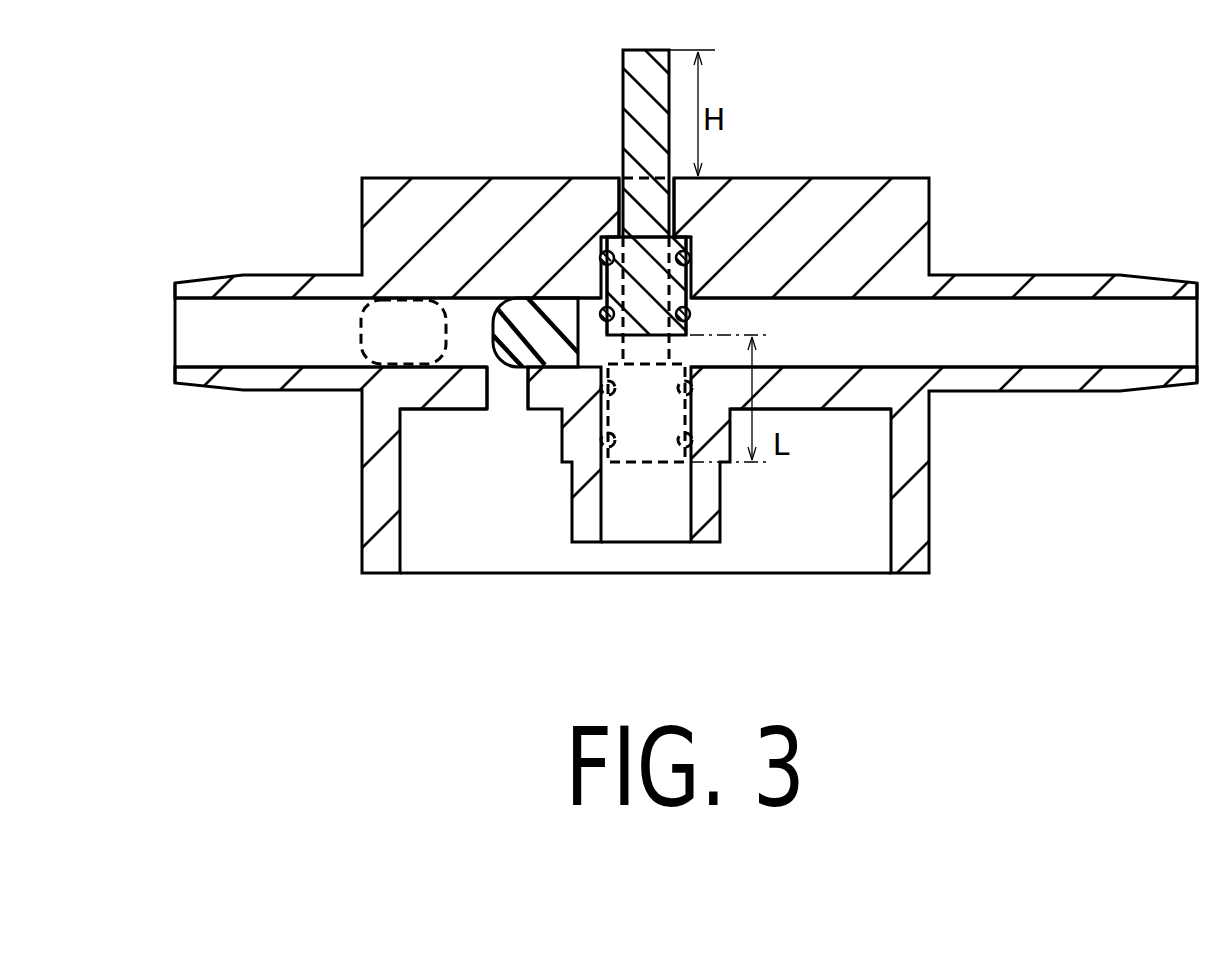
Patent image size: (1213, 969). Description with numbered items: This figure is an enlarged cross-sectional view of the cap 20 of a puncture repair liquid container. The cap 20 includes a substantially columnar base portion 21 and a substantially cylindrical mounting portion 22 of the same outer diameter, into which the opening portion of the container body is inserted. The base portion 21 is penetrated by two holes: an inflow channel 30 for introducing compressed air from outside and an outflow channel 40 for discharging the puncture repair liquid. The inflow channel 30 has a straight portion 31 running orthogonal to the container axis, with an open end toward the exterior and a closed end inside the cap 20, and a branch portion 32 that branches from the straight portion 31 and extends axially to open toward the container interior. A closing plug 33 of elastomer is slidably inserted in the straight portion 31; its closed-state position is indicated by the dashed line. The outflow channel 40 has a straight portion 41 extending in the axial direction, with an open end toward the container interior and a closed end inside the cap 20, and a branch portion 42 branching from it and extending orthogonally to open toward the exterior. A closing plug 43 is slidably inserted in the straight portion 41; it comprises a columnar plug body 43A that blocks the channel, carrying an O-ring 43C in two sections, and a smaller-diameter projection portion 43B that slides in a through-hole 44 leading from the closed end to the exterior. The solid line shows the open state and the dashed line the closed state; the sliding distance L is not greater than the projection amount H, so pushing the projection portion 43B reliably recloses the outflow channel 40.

The cap 20 is at (910, 143).
The base portion 21 is at (423, 183).
The mounting portion 22 is at (380, 552).
The inflow channel 30 is at (388, 398).
The straight portion 31 is at (328, 347).
The branch portion 32 is at (507, 390).
The closing plug 33 is at (537, 333).
The outflow channel 40 is at (798, 428).
The straight portion 41 is at (653, 490).
The branch portion 42 is at (928, 340).
The closing plug 43 is at (670, 251).
The plug body 43A is at (652, 285).
The projection portion 43B is at (645, 68).
The O-ring 43C is at (693, 313).
The through-hole 44 is at (627, 182).